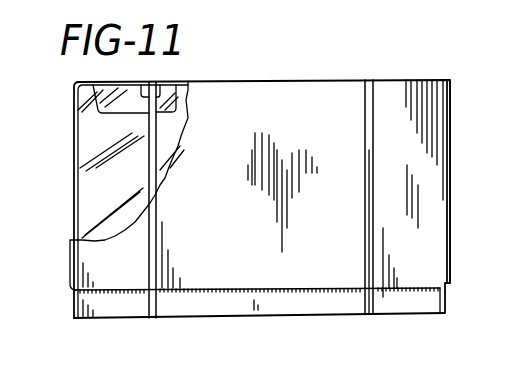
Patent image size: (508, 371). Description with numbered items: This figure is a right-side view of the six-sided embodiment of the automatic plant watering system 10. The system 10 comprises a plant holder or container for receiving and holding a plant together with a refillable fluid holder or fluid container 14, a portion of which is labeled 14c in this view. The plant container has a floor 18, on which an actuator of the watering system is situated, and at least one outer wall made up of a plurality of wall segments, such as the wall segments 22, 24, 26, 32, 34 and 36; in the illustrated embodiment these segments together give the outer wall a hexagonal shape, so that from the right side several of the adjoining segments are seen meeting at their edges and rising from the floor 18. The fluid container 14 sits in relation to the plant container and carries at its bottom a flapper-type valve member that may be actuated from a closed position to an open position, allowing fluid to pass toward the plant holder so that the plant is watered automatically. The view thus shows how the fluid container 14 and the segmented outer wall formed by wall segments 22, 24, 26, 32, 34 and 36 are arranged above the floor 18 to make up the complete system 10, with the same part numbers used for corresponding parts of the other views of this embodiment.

The automatic plant watering system 10 is at (274, 68).
The fluid container 14 is at (82, 164).
The housing portion 14c is at (488, 349).
The floor 18 is at (343, 313).
The wall segment 22 is at (228, 103).
The wall segment 24 is at (402, 97).
The wall segment 26 is at (450, 108).
The wall segment 32 is at (500, 227).
The wall segment 34 is at (507, 310).
The wall segment 36 is at (85, 268).